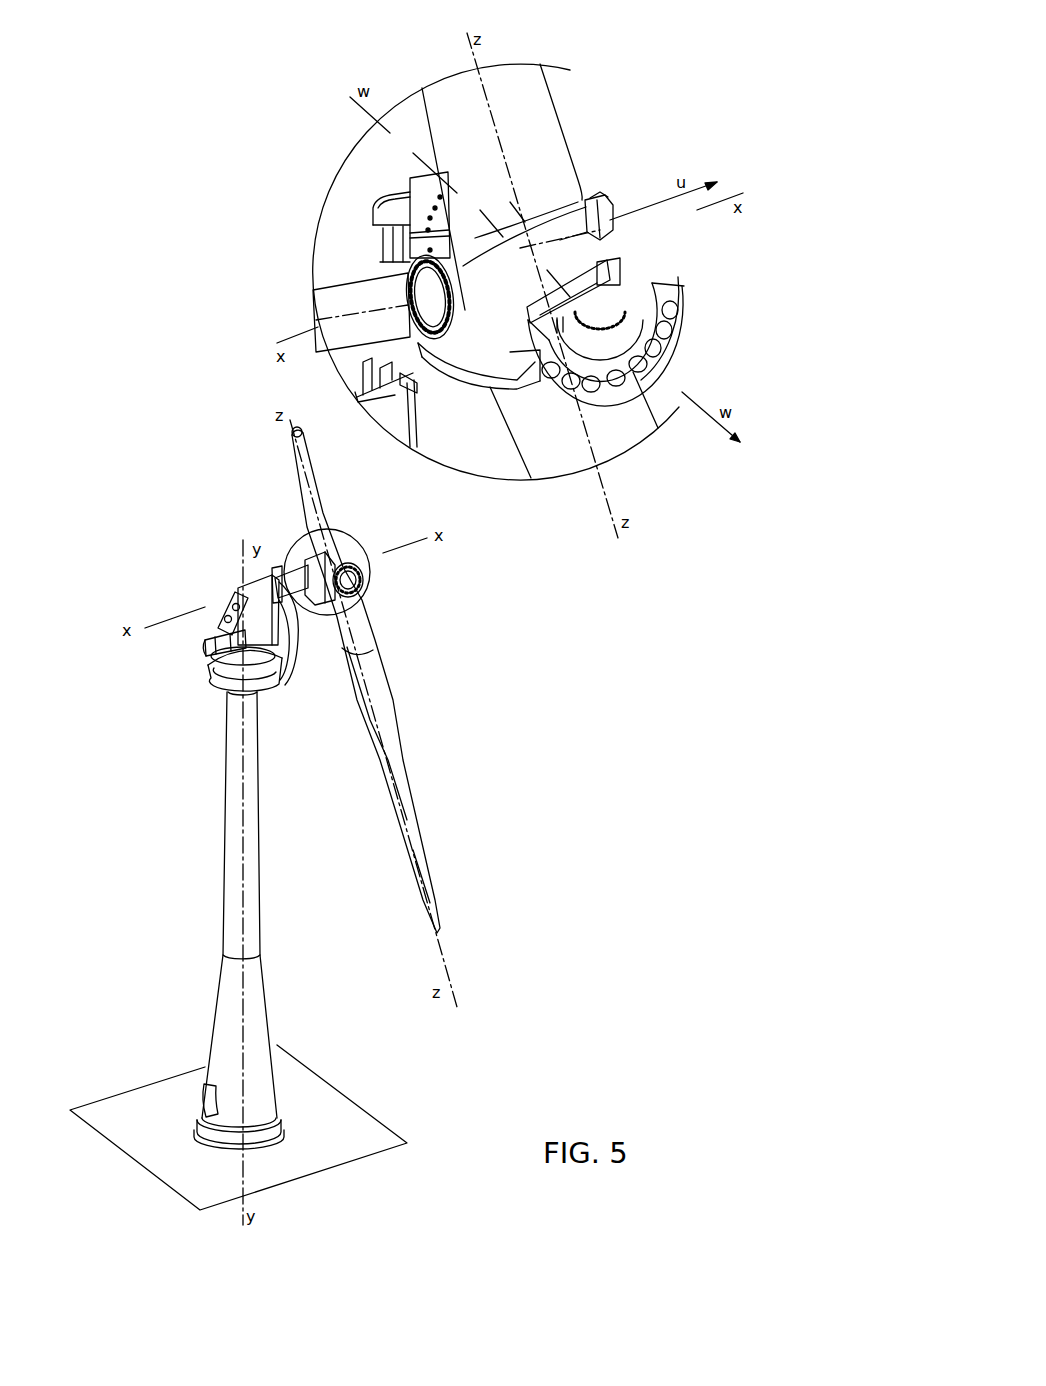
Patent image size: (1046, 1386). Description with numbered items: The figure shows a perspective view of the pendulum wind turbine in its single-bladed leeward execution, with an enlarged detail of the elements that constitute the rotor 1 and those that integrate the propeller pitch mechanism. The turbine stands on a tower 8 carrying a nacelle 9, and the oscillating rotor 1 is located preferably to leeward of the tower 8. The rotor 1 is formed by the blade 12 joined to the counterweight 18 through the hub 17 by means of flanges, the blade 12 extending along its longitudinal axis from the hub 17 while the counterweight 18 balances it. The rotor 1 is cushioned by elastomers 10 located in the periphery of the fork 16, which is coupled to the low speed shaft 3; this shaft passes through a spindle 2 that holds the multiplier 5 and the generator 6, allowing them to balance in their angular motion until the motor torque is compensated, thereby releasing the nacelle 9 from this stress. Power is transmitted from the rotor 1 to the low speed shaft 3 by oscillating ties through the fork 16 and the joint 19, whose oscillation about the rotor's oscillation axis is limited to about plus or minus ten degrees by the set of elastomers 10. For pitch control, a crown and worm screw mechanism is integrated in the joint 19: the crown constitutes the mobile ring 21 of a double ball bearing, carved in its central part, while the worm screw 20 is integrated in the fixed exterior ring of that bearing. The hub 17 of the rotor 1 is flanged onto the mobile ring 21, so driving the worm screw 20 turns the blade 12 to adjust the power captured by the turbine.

The rotor 1 is at (367, 590).
The spindle 2 is at (330, 310).
The low speed shaft 3 is at (383, 262).
The multiplier 5 is at (260, 617).
The generator 6 is at (207, 647).
The tower 8 is at (237, 823).
The nacelle 9 is at (223, 673).
The elastomers 10 is at (658, 333).
The blade 12 is at (380, 700).
The fork 16 is at (373, 205).
The hub 17 is at (533, 117).
The counterweight 18 is at (295, 432).
The joint 19 is at (592, 303).
The worm screw 20 is at (612, 222).
The mobile ring 21 is at (600, 200).